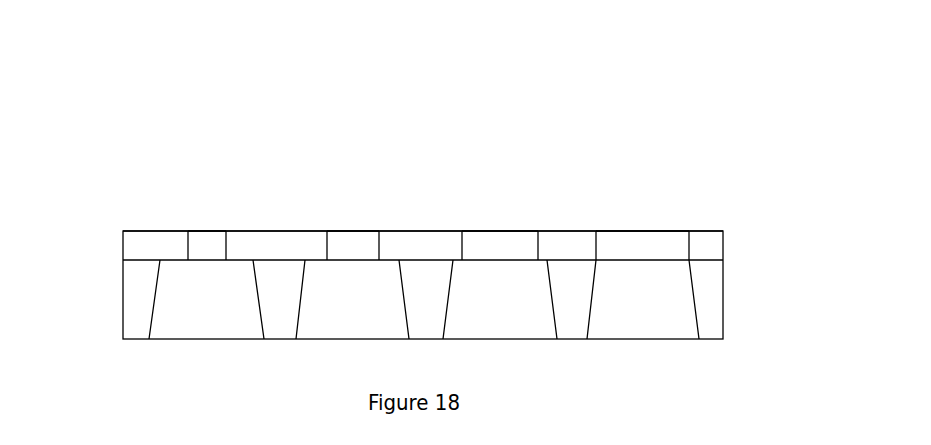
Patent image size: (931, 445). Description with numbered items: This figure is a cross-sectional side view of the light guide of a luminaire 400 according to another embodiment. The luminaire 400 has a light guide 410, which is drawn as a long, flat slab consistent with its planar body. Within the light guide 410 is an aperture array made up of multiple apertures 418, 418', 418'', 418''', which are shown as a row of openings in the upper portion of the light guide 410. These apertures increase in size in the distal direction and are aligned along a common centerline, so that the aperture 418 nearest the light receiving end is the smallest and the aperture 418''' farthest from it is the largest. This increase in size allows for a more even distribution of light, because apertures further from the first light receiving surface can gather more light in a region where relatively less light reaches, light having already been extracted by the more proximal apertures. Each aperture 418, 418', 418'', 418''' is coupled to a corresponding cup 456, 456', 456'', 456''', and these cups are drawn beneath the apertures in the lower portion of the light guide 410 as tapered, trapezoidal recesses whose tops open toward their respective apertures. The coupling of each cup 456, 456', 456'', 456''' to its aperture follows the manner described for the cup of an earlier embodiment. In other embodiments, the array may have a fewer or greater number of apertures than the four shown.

The luminaire 400 is at (132, 203).
The light guide 410 is at (733, 250).
The aperture 418 is at (231, 197).
The aperture 418' is at (374, 197).
The aperture 418'' is at (519, 197).
The aperture 418''' is at (649, 197).
The cup 456 is at (206, 299).
The cup 456' is at (352, 299).
The cup 456'' is at (500, 299).
The cup 456''' is at (643, 299).